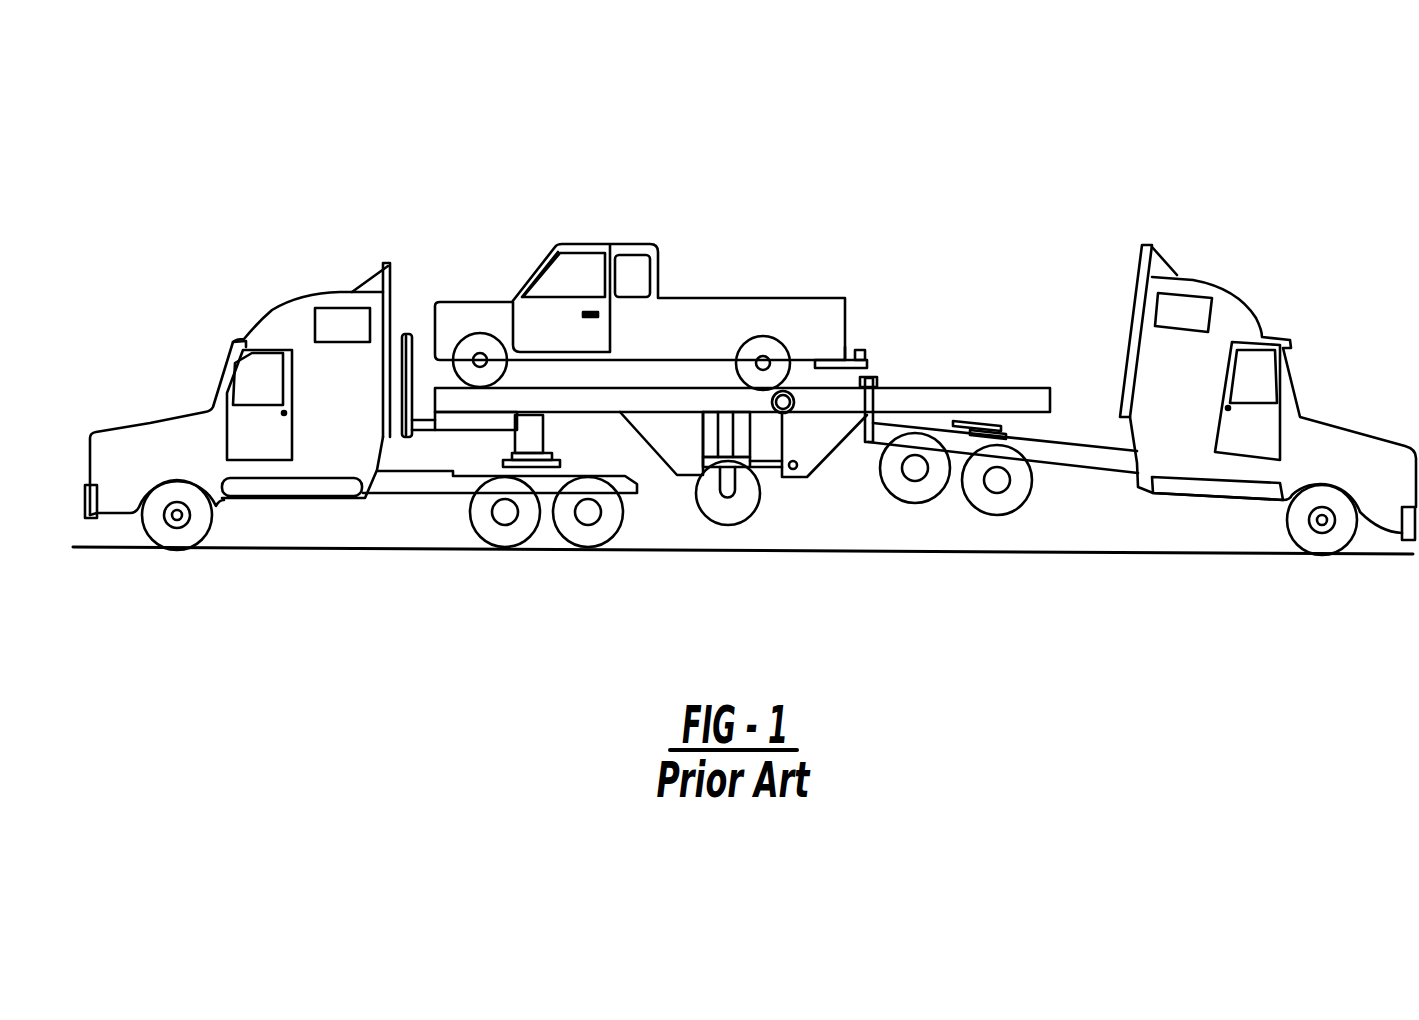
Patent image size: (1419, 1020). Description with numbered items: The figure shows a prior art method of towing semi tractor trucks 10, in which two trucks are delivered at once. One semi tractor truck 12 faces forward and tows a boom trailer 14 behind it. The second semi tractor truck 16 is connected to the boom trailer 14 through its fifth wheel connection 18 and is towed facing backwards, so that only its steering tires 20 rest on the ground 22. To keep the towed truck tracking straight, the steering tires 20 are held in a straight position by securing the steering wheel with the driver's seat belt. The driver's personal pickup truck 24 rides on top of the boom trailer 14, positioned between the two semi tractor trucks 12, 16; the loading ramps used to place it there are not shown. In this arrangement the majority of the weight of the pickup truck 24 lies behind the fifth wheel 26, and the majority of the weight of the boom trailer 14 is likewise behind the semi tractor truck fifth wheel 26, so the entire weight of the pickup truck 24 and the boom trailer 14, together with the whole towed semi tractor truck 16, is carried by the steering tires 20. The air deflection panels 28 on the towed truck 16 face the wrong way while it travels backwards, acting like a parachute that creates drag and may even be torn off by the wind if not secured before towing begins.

The semi tractor trucks towing method 10 is at (336, 190).
The semi tractor truck 12 is at (152, 418).
The boom trailer 14 is at (477, 430).
The second semi tractor truck 16 is at (1298, 383).
The fifth wheel connection 18 is at (876, 378).
The steering tires 20 is at (1303, 535).
The ground 22 is at (1169, 633).
The pickup truck 24 is at (473, 300).
The fifth wheel 26 is at (545, 448).
The air deflection panels 28 is at (981, 422).